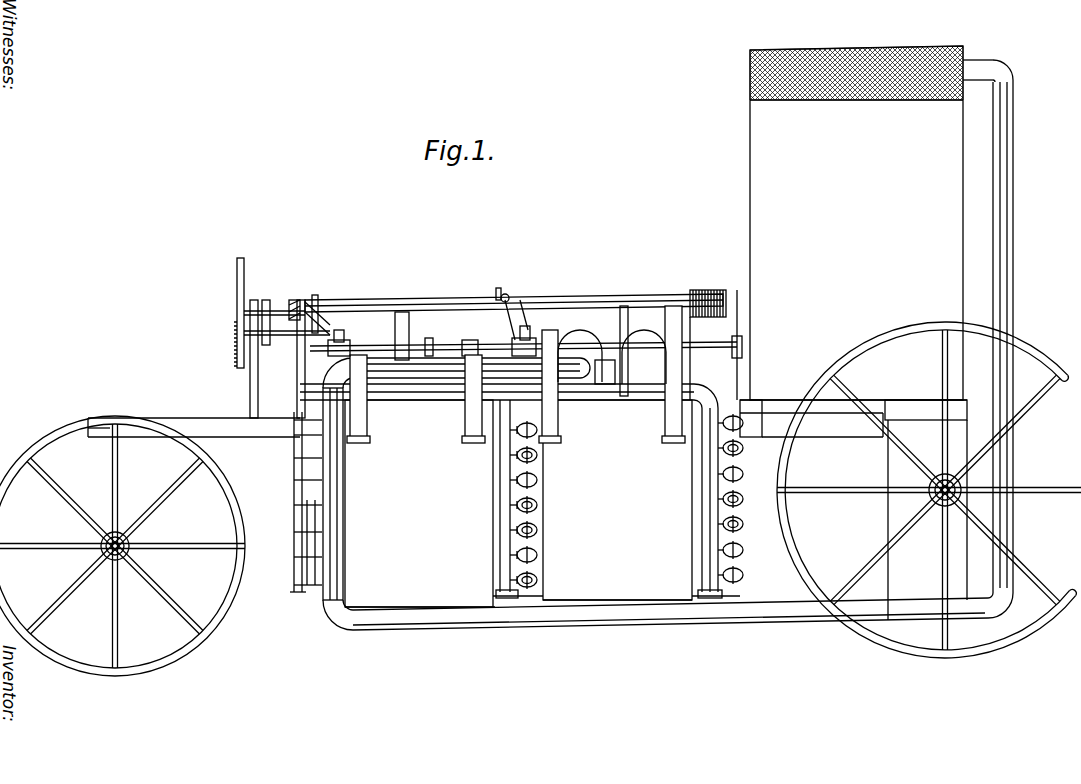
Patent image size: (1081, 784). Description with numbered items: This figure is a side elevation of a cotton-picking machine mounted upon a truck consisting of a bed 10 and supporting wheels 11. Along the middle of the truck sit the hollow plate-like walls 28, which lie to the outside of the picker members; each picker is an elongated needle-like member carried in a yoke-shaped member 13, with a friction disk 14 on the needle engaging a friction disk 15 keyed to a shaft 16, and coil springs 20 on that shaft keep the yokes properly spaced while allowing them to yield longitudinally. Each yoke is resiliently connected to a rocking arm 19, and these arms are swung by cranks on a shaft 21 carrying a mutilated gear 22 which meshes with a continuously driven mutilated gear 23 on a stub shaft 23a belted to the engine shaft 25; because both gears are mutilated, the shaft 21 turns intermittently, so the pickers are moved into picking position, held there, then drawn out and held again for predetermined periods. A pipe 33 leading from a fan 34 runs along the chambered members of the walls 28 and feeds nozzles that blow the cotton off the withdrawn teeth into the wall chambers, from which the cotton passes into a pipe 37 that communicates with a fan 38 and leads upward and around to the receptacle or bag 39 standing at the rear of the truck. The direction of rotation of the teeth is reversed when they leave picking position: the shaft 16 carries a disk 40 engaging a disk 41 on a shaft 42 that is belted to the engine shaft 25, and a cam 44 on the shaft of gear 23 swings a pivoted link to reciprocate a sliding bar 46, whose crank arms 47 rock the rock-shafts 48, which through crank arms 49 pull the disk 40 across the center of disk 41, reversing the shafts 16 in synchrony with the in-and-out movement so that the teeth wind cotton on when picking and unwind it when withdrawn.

The bed 10 is at (252, 424).
The supporting wheels 11 is at (230, 586).
The yoke-shaped member 13 is at (517, 452).
The friction disk 14 is at (538, 456).
The friction disk 15 is at (538, 502).
The shaft 16 is at (538, 531).
The rocking arm 19 is at (500, 511).
The coil springs 20 is at (538, 579).
The shaft 21 is at (431, 338).
The mutilated gear 22 is at (268, 346).
The mutilated gear 23 is at (266, 300).
The stub shaft 23a is at (291, 300).
The engine shaft 25 is at (392, 346).
The walls 28 is at (542, 503).
The pipe 33 is at (419, 401).
The fan 34 is at (643, 333).
The pipe 37 is at (1006, 232).
The fan 38 is at (578, 333).
The receptacle 39 is at (856, 223).
The disk 40 is at (334, 342).
The disk 41 is at (343, 342).
The shaft 42 is at (455, 341).
The cam 44 is at (306, 302).
The sliding bar 46 is at (404, 302).
The crank arms 47 is at (320, 300).
The rock-shafts 48 is at (498, 290).
The crank arms 49 is at (527, 296).